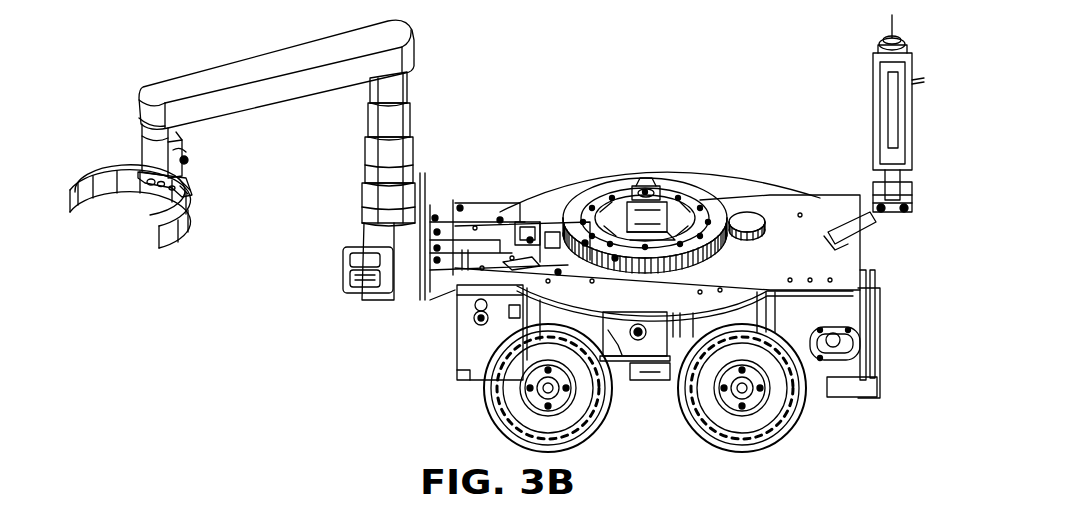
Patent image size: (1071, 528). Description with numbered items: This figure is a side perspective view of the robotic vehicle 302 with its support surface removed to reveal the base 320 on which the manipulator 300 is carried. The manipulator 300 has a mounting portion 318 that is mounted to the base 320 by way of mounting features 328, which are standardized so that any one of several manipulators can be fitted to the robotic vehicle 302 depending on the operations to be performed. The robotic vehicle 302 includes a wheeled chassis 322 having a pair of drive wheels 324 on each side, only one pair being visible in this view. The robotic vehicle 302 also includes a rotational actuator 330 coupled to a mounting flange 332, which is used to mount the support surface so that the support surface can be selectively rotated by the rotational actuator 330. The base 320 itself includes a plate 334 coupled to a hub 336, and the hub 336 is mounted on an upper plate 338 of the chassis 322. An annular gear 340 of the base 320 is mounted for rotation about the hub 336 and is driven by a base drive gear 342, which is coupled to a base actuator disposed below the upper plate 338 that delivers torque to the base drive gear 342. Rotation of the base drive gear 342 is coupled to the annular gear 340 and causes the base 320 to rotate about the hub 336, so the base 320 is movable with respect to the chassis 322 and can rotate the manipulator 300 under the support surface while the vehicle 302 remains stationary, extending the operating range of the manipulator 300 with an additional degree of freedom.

The manipulator 300 is at (122, 110).
The robotic vehicle 302 is at (843, 423).
The mounting portion 318 is at (430, 292).
The base 320 is at (658, 128).
The wheeled chassis 322 is at (860, 323).
The drive wheels 324 is at (683, 430).
The mounting features 328 is at (432, 198).
The rotational actuator 330 is at (663, 230).
The mounting flange 332 is at (647, 188).
The plate 334 is at (528, 243).
The hub 336 is at (585, 212).
The upper plate 338 is at (822, 210).
The annular gear 340 is at (627, 188).
The base drive gear 342 is at (745, 222).